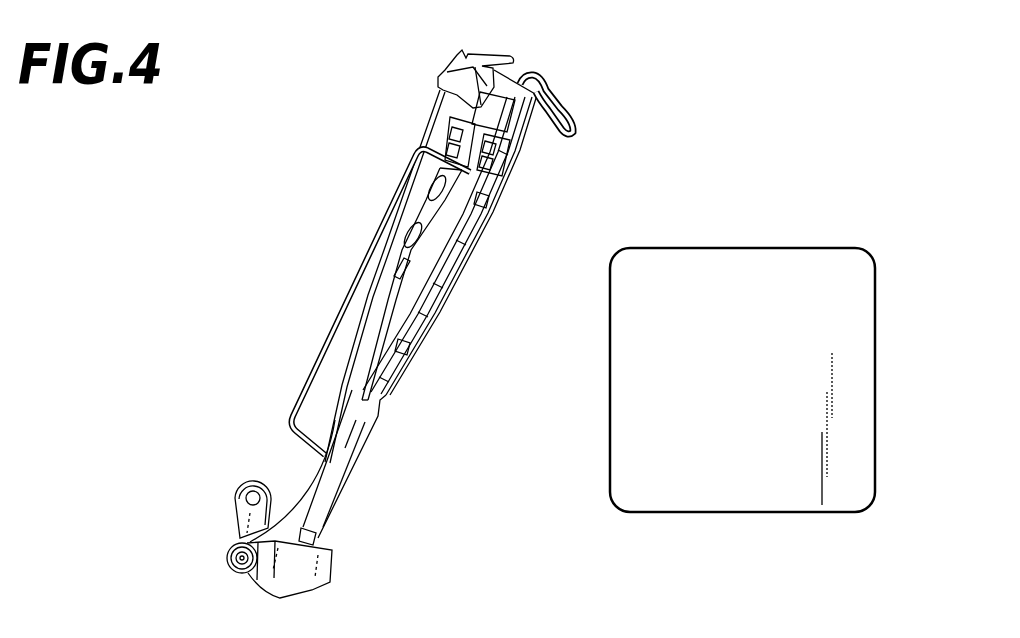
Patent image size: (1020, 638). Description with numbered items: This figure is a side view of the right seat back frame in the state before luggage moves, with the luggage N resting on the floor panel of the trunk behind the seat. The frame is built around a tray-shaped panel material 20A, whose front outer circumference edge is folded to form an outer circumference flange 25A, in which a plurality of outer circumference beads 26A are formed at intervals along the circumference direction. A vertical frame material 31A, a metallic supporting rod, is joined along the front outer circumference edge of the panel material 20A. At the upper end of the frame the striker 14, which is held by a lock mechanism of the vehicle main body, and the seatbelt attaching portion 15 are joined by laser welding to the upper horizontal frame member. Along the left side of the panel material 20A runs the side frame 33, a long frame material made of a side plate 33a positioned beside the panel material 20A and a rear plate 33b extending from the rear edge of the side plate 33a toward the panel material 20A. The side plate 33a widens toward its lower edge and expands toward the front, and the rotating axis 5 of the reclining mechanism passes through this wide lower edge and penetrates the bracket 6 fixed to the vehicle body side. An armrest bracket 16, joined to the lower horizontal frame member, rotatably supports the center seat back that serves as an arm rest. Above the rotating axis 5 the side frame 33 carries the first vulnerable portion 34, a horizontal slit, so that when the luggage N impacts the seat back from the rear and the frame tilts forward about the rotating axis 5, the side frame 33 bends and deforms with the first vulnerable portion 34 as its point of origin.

The seatbelt attaching portion 15 is at (447, 72).
The striker 14 is at (572, 112).
The vertical frame material 31A is at (432, 135).
The panel material 20A is at (412, 263).
The outer circumference flange 25A is at (448, 268).
The outer circumference bead 26A is at (483, 198).
The side frame 33 is at (367, 443).
The side plate 33a is at (300, 503).
The rear plate 33b is at (353, 467).
The first vulnerable portion 34 is at (322, 533).
The armrest bracket 16 is at (238, 492).
The rotating axis 5 is at (238, 560).
The bracket 6 is at (303, 580).
The luggage N is at (783, 258).